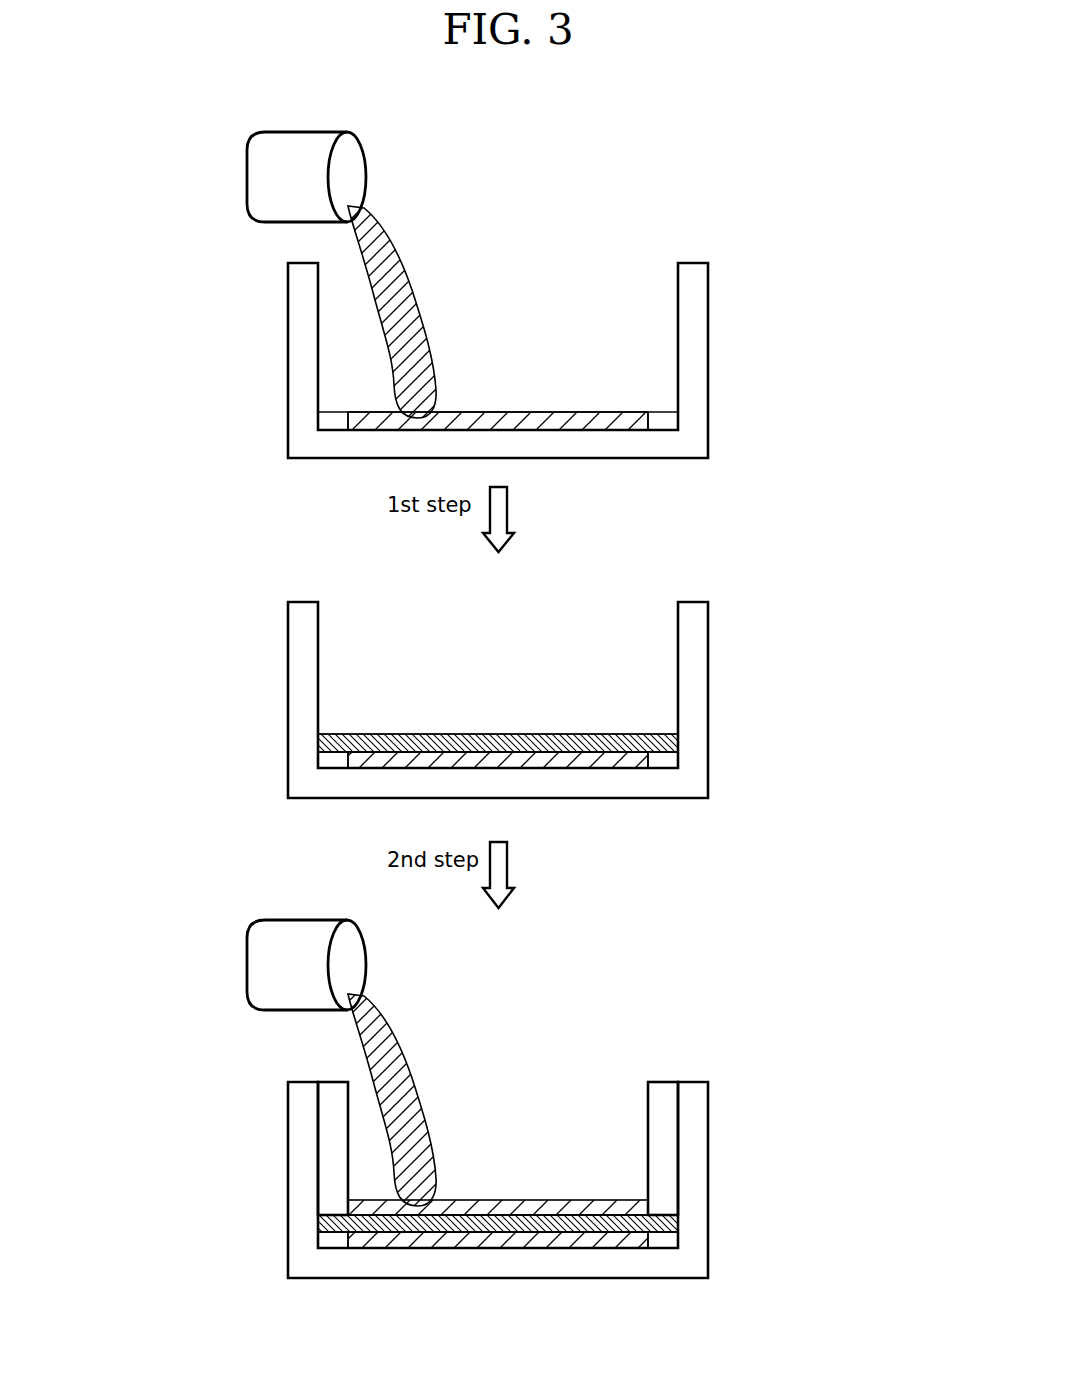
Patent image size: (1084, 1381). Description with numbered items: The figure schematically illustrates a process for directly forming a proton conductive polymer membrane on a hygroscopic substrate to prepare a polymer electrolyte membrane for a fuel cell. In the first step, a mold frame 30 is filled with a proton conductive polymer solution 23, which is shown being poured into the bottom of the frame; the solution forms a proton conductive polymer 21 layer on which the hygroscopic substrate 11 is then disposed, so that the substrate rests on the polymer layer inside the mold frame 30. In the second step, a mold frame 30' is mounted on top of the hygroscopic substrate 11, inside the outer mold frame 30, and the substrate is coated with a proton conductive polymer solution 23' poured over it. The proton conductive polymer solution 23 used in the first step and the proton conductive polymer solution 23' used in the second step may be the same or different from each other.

The hygroscopic substrate 11 is at (538, 734).
The proton conductive polymer 21 is at (573, 761).
The proton conductive polymer solution 23 is at (350, 275).
The proton conductive polymer solution 23' is at (447, 1067).
The mold frame 30 is at (530, 770).
The mold frame 30' is at (502, 1122).